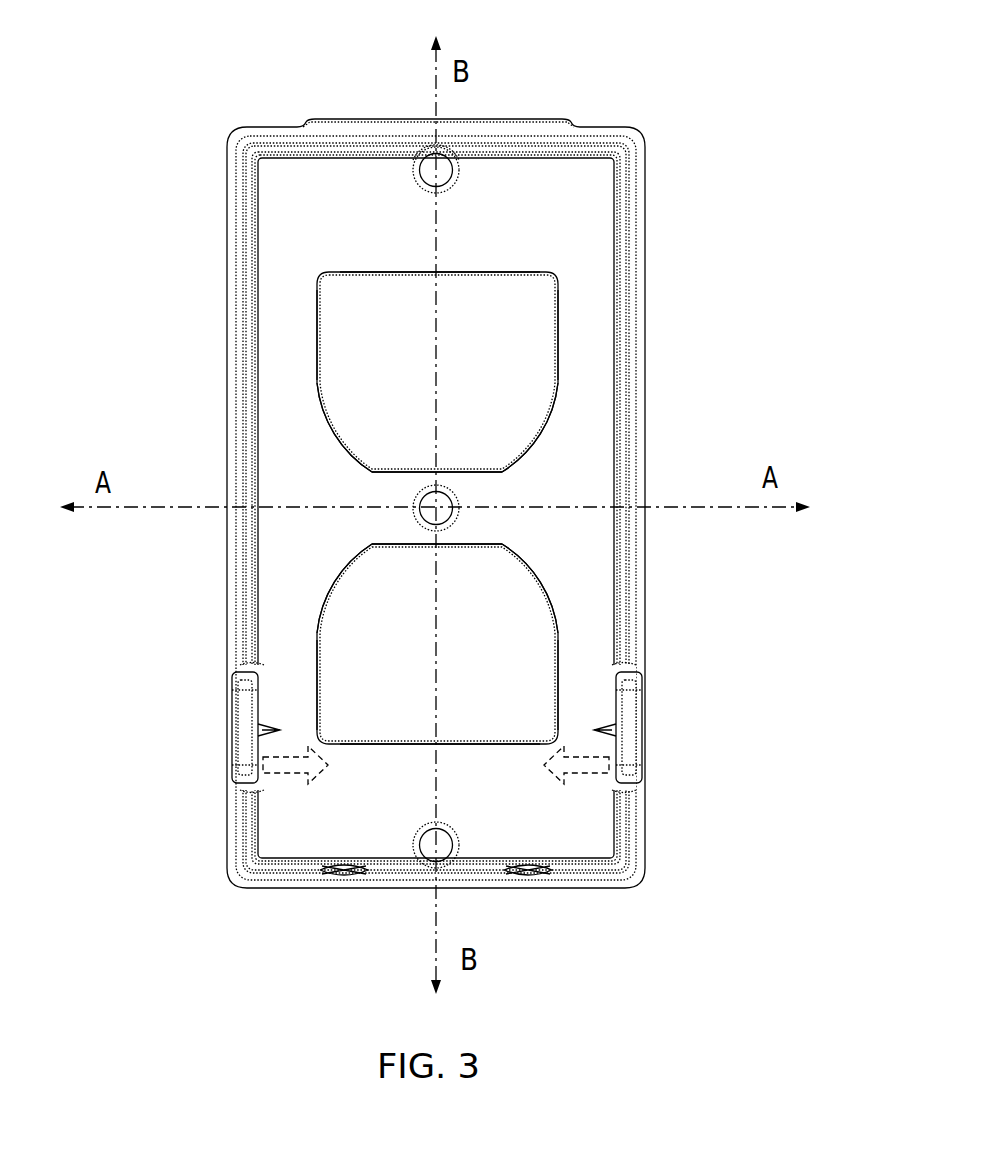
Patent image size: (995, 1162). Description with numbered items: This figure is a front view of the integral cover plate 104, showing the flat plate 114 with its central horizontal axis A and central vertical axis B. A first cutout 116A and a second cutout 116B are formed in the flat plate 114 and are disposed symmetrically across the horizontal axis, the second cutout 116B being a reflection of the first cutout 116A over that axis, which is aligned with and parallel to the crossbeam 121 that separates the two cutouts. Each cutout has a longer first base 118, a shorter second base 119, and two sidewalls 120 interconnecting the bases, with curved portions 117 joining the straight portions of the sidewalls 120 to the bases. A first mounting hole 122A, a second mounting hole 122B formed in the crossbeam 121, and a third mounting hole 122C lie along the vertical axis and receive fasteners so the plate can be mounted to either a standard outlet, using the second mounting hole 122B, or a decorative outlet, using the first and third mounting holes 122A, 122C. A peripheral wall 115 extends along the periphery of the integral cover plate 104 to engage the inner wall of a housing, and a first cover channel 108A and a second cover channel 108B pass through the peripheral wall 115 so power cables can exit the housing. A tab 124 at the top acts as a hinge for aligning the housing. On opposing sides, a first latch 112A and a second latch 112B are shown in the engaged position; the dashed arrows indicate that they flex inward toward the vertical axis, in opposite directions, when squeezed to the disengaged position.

The integral cover plate 104 is at (744, 84).
The first cover channel 108A is at (340, 868).
The second cover channel 108B is at (530, 868).
The first latch 112A is at (232, 758).
The second latch 112B is at (642, 725).
The flat plate 114 is at (627, 250).
The peripheral wall 115 is at (640, 200).
The first cutout 116A is at (310, 337).
The second cutout 116B is at (563, 643).
The curved portion 117 is at (338, 440).
The first base 118 is at (373, 272).
The second base 119 is at (345, 471).
The sidewall 120 is at (318, 318).
The crossbeam 121 is at (370, 496).
The first mounting hole 122A is at (430, 866).
The second mounting hole 122B is at (420, 512).
The third mounting hole 122C is at (458, 174).
The tab 124 is at (527, 133).